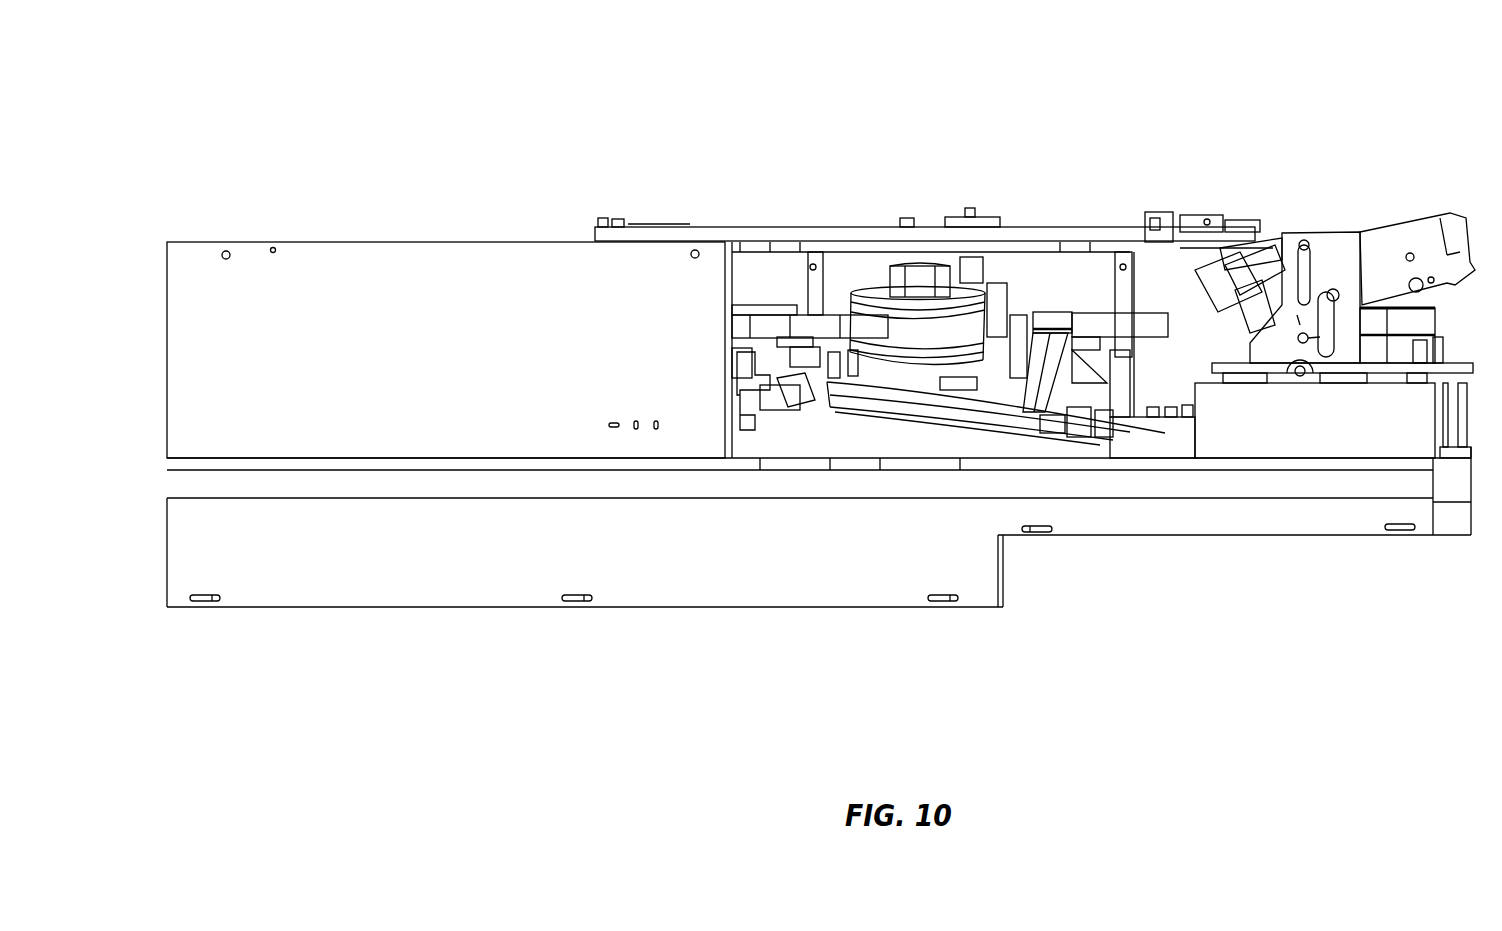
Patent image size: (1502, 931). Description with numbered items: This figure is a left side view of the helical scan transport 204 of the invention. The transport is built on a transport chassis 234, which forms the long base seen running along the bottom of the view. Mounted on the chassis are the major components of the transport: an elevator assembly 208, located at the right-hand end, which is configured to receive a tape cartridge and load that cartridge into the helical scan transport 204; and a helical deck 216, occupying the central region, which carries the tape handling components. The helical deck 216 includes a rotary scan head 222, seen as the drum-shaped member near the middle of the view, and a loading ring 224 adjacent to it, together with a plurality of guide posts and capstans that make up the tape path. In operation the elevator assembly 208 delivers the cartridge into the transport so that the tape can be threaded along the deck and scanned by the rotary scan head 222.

The helical scan transport 204 is at (443, 146).
The elevator assembly 208 is at (1381, 238).
The helical deck 216 is at (866, 449).
The rotary scan head 222 is at (935, 327).
The loading ring 224 is at (863, 392).
The transport chassis 234 is at (494, 585).